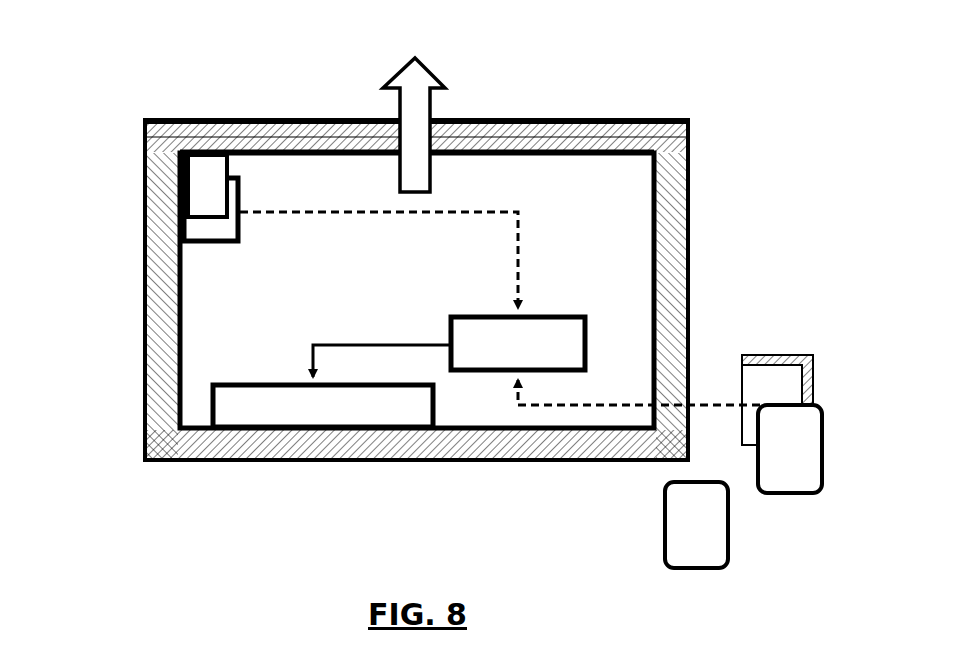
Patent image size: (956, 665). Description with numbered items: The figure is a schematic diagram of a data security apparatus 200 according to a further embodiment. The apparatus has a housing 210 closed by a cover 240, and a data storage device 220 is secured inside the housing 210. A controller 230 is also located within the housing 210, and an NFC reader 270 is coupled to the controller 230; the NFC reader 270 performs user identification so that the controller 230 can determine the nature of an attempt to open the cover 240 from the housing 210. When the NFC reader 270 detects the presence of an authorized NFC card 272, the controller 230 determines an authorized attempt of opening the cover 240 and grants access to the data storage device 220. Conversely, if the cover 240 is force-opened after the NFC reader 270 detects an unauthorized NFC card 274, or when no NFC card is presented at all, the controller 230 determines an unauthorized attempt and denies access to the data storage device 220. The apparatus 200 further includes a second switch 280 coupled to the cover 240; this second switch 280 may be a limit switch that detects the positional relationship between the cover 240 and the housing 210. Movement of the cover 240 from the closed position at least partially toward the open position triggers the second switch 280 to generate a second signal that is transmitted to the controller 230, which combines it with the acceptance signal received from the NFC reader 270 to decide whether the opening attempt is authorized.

The data security apparatus 200 is at (272, 72).
The housing 210 is at (146, 412).
The data storage device 220 is at (230, 400).
The controller 230 is at (552, 333).
The cover 240 is at (165, 137).
The NFC reader 270 is at (808, 380).
The authorized NFC card 272 is at (823, 458).
The unauthorized NFC card 274 is at (728, 527).
The second switch 280 is at (146, 192).